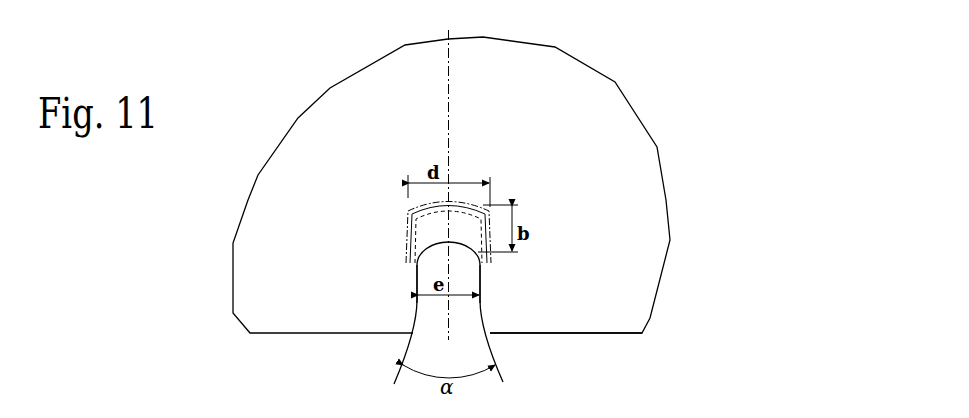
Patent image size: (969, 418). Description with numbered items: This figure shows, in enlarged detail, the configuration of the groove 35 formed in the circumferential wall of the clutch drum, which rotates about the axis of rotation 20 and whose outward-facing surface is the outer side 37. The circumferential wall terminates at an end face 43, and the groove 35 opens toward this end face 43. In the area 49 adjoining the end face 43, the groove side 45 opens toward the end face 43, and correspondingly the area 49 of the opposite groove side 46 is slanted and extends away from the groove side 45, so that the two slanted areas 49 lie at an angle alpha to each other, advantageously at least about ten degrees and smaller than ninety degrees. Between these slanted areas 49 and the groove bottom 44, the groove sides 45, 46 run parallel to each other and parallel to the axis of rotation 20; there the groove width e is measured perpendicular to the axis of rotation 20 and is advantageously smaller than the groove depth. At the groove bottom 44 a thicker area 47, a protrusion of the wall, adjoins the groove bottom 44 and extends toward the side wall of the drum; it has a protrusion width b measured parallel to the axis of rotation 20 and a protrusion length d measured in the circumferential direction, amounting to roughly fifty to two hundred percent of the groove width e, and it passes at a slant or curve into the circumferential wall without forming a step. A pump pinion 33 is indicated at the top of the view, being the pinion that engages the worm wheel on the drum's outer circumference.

The axis of rotation 20 is at (450, 72).
The pump pinion 33 is at (405, 4).
The groove 35 is at (430, 327).
The outer side 37 is at (615, 138).
The end face 43 is at (593, 335).
The groove bottom 44 is at (430, 243).
The groove side 45 is at (415, 282).
The groove side 46 is at (482, 282).
The thicker area 47 is at (430, 225).
The slanted area 49 is at (413, 313).